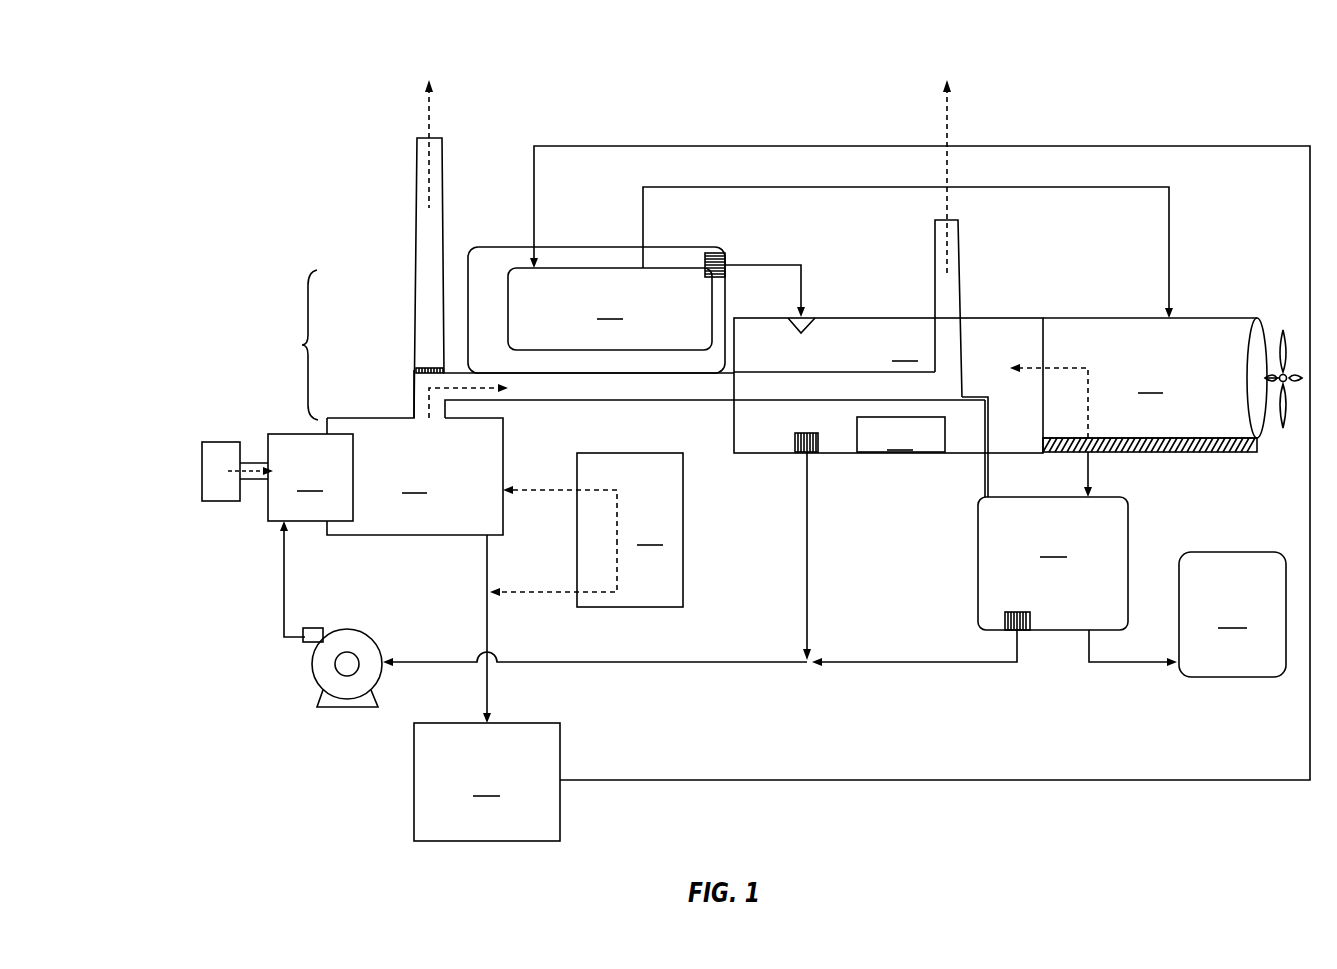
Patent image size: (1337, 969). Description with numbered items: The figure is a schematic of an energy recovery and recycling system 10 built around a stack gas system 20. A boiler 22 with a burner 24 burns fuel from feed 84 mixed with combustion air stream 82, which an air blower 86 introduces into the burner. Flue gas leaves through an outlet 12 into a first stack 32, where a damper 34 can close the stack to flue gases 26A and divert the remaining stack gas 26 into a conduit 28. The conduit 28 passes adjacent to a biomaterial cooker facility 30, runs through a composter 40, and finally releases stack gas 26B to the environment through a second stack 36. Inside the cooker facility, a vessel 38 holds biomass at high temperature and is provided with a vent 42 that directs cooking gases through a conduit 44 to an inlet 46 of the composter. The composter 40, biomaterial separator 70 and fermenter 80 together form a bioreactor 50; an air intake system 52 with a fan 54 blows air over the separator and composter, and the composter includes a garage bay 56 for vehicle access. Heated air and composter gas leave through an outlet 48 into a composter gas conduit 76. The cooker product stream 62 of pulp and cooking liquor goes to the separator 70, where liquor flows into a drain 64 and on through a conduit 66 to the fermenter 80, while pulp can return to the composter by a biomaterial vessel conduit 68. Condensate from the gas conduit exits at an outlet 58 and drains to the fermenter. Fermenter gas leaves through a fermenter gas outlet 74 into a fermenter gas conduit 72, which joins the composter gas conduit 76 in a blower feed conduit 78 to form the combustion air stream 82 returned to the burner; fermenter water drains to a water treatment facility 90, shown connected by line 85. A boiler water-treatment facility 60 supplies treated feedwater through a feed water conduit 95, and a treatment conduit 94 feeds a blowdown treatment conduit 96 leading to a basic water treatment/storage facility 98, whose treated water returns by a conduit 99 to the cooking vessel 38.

The energy recovery and recycling system 10 is at (252, 104).
The outlet 12 is at (413, 415).
The stack gas system 20 is at (294, 345).
The boiler 22 is at (415, 476).
The burner 24 is at (310, 477).
The stack gas 26 is at (429, 396).
The flue gases 26A is at (428, 130).
The stack gas 26B is at (946, 125).
The conduit 28 is at (612, 400).
The biomaterial cooker facility 30 is at (510, 246).
The first stack 32 is at (415, 208).
The damper 34 is at (427, 367).
The second stack 36 is at (935, 262).
The vessel 38 is at (610, 309).
The composter 40 is at (888, 385).
The vent 42 is at (727, 262).
The conduit 44 is at (766, 265).
The inlet 46 is at (805, 320).
The outlet 48 is at (800, 457).
The bioreactor 50 is at (963, 463).
The air intake system 52 is at (1255, 378).
The fan 54 is at (1282, 328).
The garage bay 56 is at (901, 435).
The outlet 58 is at (975, 397).
The boiler water-treatment facility 60 is at (630, 530).
The product stream 62 is at (822, 188).
The drain 64 is at (1195, 452).
The conduit 66 is at (1090, 460).
The biomaterial vessel conduit 68 is at (1063, 368).
The biomaterial separator 70 is at (1155, 378).
The fermenter gas conduit 72 is at (895, 663).
The fermenter gas outlet 74 is at (1020, 634).
The composter gas conduit 76 is at (805, 556).
The blower feed conduit 78 is at (653, 663).
The fermenter 80 is at (1053, 563).
The combustion air feed 82 is at (283, 563).
The fuel feed 84 is at (202, 470).
The fermenter product line 85 is at (1133, 663).
The air blower 86 is at (313, 663).
The water treatment facility 90 is at (1232, 614).
The treatment conduit 94 is at (515, 593).
The feed water conduit 95 is at (523, 492).
The blowdown treatment conduit 96 is at (485, 697).
The basic water treatment/storage facility 98 is at (487, 782).
The conduit 99 is at (808, 782).